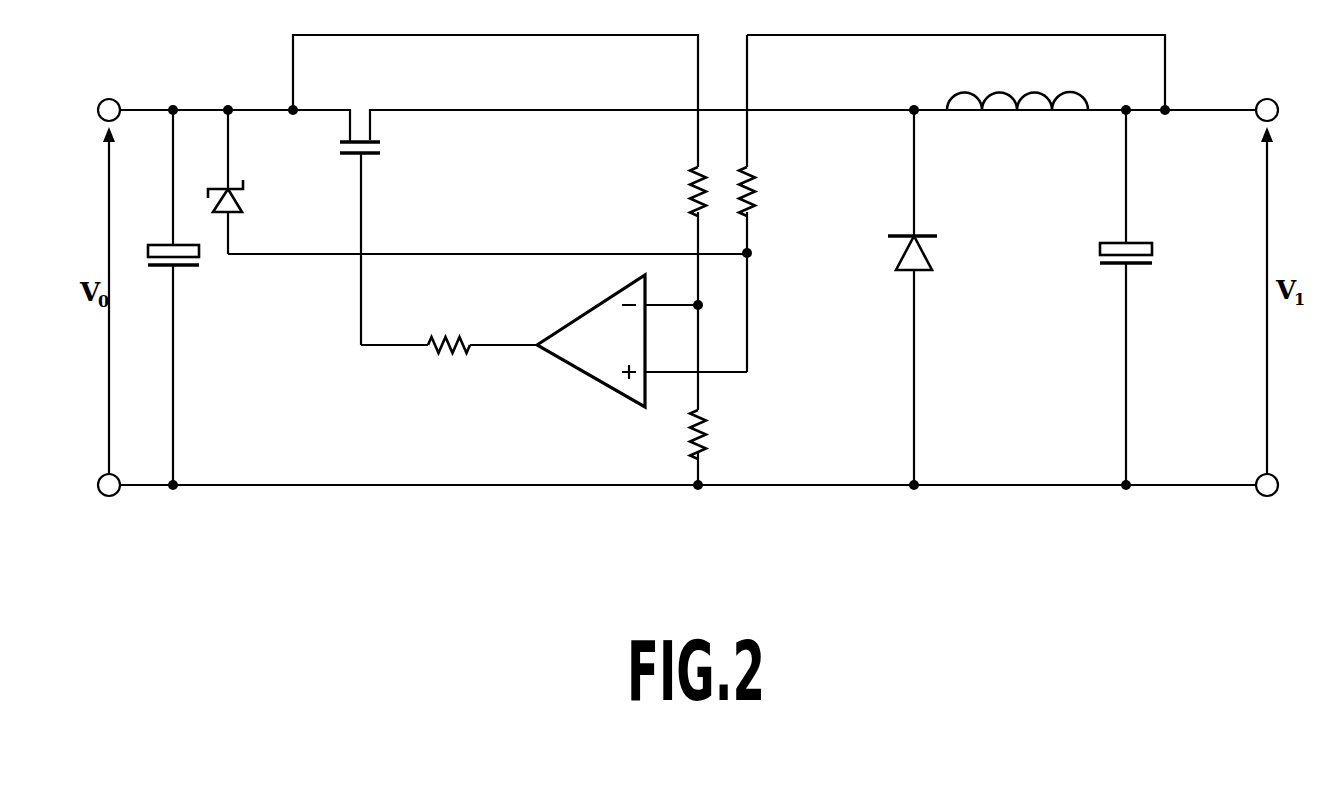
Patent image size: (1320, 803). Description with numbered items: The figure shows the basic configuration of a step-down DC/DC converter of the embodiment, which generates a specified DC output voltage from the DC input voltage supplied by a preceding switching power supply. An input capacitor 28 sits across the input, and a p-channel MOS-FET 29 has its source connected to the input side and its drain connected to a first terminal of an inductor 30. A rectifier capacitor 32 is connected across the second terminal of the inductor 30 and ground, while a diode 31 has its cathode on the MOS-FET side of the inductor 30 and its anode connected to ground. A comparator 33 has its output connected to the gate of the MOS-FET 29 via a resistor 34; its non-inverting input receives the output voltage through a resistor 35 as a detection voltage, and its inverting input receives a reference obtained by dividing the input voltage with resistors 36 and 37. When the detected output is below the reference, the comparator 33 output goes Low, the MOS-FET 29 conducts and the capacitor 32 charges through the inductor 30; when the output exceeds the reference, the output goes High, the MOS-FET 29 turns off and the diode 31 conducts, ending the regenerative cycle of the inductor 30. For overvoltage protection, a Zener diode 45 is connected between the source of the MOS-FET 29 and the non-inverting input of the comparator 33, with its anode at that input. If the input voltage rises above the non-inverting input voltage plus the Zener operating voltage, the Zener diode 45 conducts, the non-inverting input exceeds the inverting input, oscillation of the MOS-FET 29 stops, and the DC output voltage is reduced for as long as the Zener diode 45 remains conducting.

The input capacitor 28 is at (190, 268).
The p-channel MOS-FET 29 is at (383, 145).
The inductor 30 is at (1017, 116).
The diode 31 is at (925, 256).
The rectifier capacitor 32 is at (1155, 250).
The comparator 33 is at (587, 380).
The resistor 34 is at (450, 352).
The resistor 35 is at (757, 192).
The resistor 36 is at (688, 192).
The resistor 37 is at (705, 437).
The Zener diode 45 is at (242, 200).